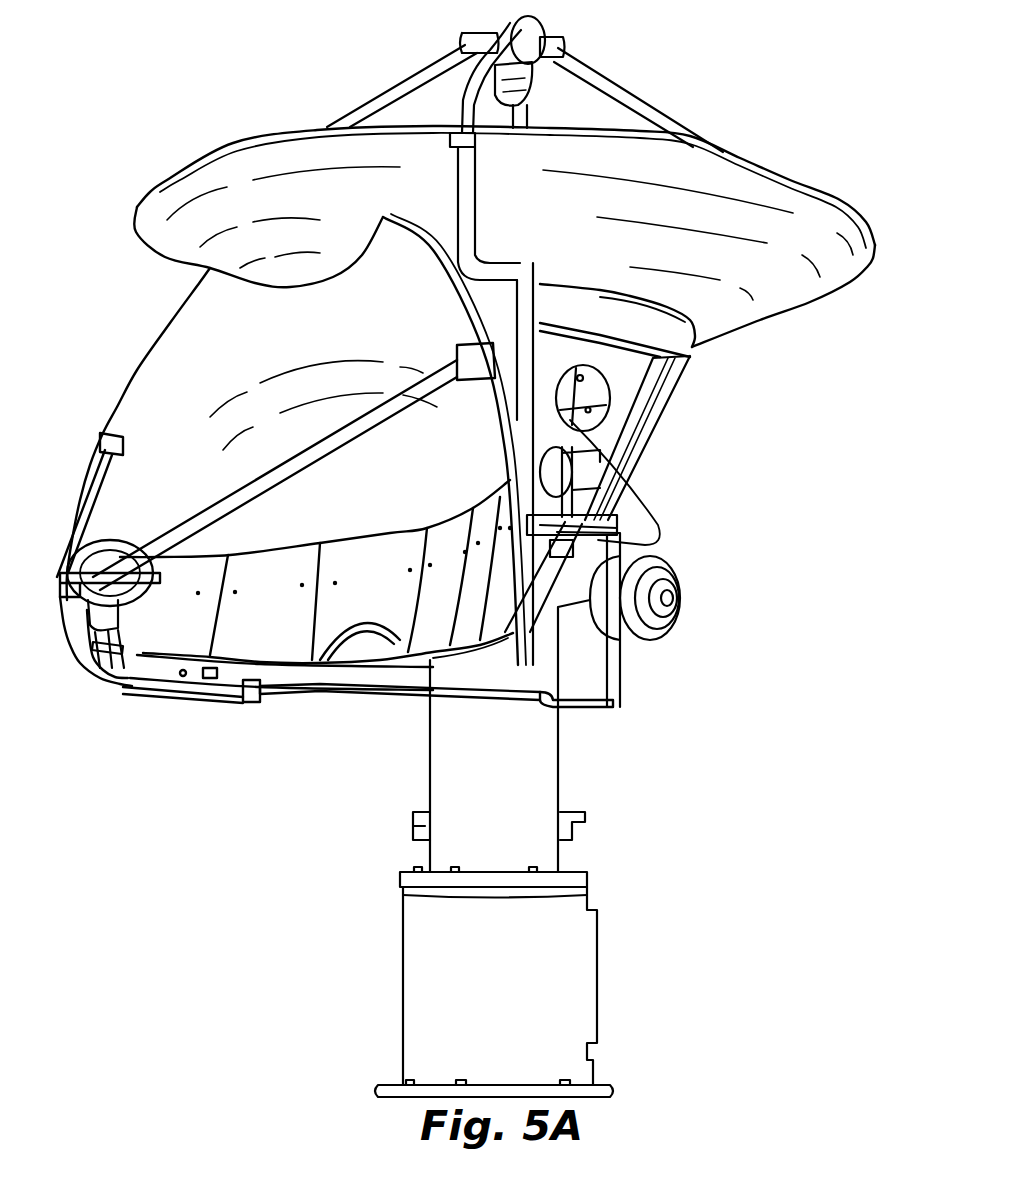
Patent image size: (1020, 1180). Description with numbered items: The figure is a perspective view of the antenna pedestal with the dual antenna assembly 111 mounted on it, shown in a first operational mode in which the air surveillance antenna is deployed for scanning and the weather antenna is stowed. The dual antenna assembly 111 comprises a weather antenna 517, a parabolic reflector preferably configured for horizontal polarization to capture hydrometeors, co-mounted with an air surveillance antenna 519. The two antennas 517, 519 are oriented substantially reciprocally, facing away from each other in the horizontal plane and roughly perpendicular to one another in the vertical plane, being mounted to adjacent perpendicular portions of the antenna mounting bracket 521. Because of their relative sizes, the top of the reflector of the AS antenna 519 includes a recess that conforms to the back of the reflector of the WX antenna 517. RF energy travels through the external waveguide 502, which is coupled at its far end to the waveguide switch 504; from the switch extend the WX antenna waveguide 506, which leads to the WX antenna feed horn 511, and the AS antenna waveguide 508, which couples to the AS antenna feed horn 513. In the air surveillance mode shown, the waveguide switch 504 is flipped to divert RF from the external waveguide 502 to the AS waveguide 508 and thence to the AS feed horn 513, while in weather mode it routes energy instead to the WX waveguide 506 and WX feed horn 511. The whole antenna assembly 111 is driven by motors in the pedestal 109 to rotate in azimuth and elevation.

The dual antenna assembly 111 is at (202, 110).
The WX antenna feed horn 511 is at (527, 82).
The weather (WX) antenna 517 is at (787, 310).
The air surveillance (AS) antenna 519 is at (138, 403).
The WX antenna waveguide 506 is at (520, 373).
The antenna mounting bracket 521 is at (662, 412).
The external waveguide 502 is at (572, 481).
The waveguide switch 504 is at (628, 546).
The AS antenna waveguide 508 is at (618, 650).
The AS antenna feed horn 513 is at (97, 607).
The pedestal 109 is at (547, 790).